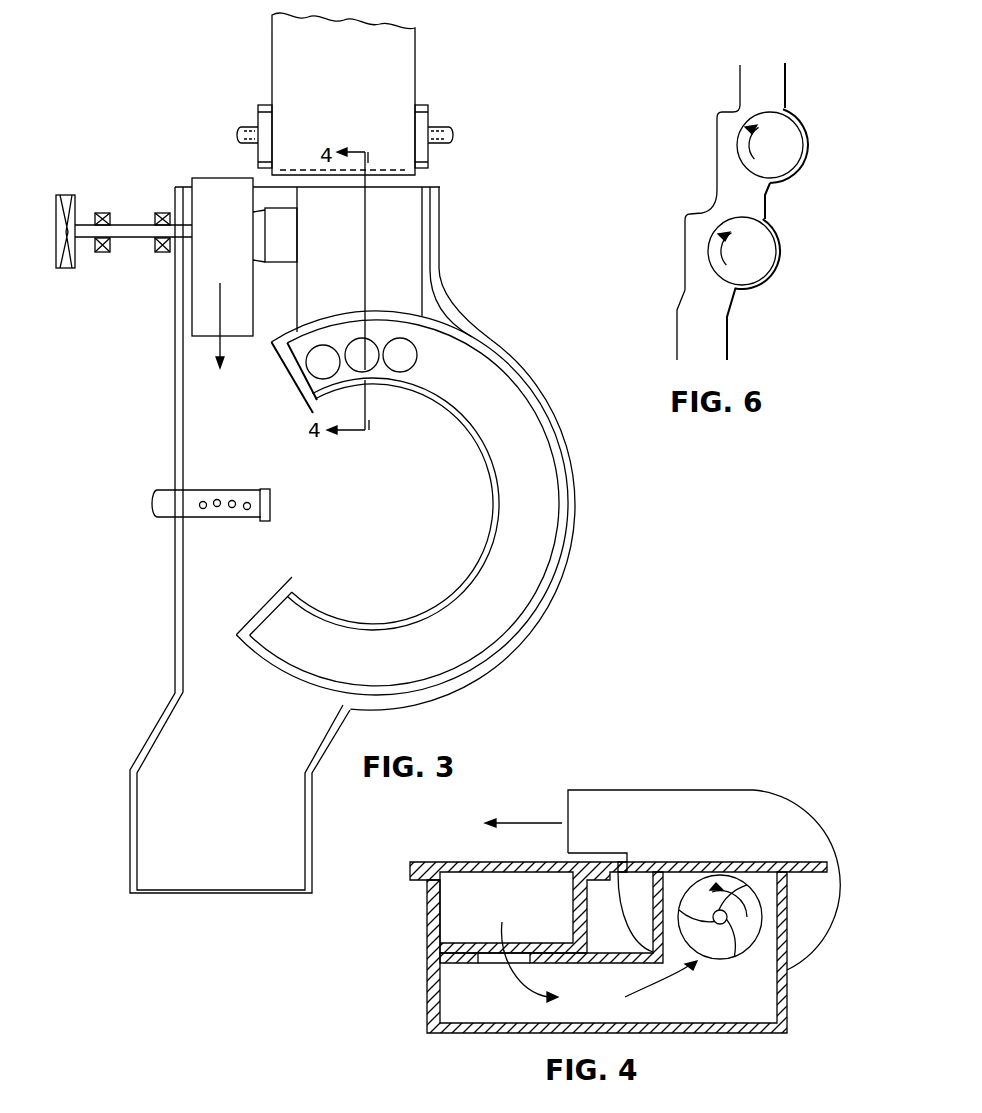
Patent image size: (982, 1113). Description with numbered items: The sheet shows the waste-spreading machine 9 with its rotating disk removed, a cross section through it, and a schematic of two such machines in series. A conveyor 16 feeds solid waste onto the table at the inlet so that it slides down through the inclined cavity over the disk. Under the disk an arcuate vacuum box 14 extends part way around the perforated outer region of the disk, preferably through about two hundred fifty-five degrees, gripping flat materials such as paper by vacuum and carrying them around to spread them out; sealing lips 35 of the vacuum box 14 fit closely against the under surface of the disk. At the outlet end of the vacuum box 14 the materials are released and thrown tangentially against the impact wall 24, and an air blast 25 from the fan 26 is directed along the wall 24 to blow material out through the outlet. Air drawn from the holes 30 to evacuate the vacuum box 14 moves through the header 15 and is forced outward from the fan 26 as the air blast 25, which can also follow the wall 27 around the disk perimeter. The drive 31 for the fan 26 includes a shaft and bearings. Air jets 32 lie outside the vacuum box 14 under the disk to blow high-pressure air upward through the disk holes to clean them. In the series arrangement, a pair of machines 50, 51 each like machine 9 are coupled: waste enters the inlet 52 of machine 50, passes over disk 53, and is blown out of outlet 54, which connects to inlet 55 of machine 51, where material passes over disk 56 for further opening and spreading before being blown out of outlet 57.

In FIG. 3, the machine 9 is at (566, 620).
In FIG. 3, the vacuum box 14 is at (532, 510).
In FIG. 4, the vacuum box 14 is at (495, 902).
In FIG. 3, the header 15 is at (400, 255).
In FIG. 4, the header 15 is at (790, 1018).
In FIG. 3, the conveyor 16 is at (357, 77).
In FIG. 3, the impact wall 24 is at (174, 344).
In FIG. 3, the air blast 25 is at (222, 346).
In FIG. 4, the air blast 25 is at (515, 822).
In FIG. 3, the fan 26 is at (231, 253).
In FIG. 4, the fan 26 is at (823, 821).
In FIG. 3, the wall 27 is at (568, 575).
In FIG. 3, the holes 30 is at (312, 378).
In FIG. 4, the holes 30 is at (515, 948).
In FIG. 3, the drive 31 is at (96, 197).
In FIG. 3, the air jets 32 is at (232, 500).
In FIG. 3, the sealing lips 35 is at (273, 604).
In FIG. 6, the machine 50 is at (798, 114).
In FIG. 6, the machine 51 is at (778, 241).
In FIG. 6, the inlet 52 is at (780, 80).
In FIG. 6, the disk 53 is at (790, 146).
In FIG. 6, the outlet 54 is at (758, 202).
In FIG. 6, the inlet 55 is at (717, 204).
In FIG. 6, the disk 56 is at (763, 257).
In FIG. 6, the outlet 57 is at (687, 342).